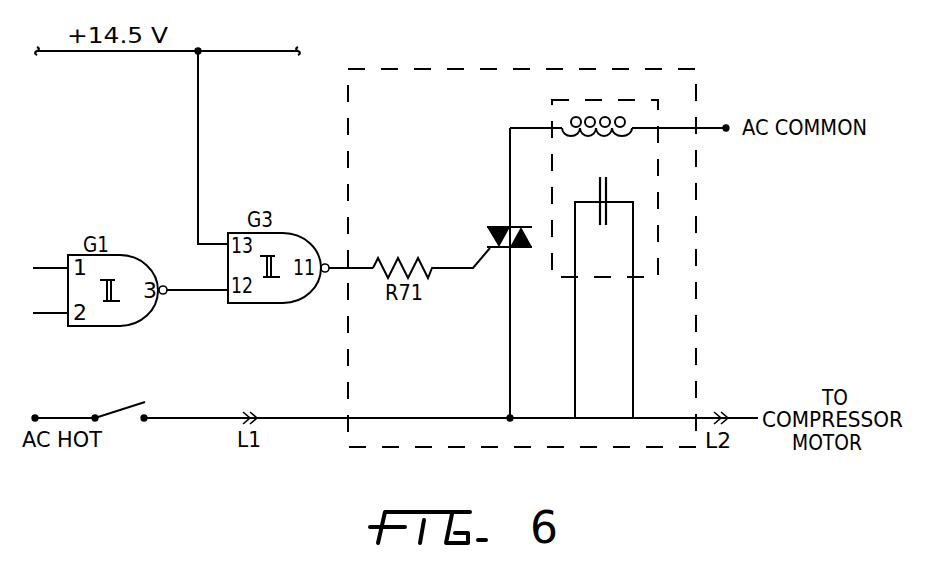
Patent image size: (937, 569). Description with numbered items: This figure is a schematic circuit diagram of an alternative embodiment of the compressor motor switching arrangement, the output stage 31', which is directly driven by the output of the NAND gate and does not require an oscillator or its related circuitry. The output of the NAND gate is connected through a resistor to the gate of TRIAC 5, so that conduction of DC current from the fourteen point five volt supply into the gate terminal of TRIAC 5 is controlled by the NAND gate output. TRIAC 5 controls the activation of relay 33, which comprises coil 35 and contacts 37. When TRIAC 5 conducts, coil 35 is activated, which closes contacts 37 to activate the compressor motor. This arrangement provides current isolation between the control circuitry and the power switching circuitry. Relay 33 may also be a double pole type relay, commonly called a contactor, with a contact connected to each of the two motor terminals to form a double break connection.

The TRIAC 5 is at (466, 273).
The output stage 31' is at (549, 236).
The relay 33 is at (559, 100).
The coil 35 is at (592, 138).
The contacts 37 is at (605, 226).